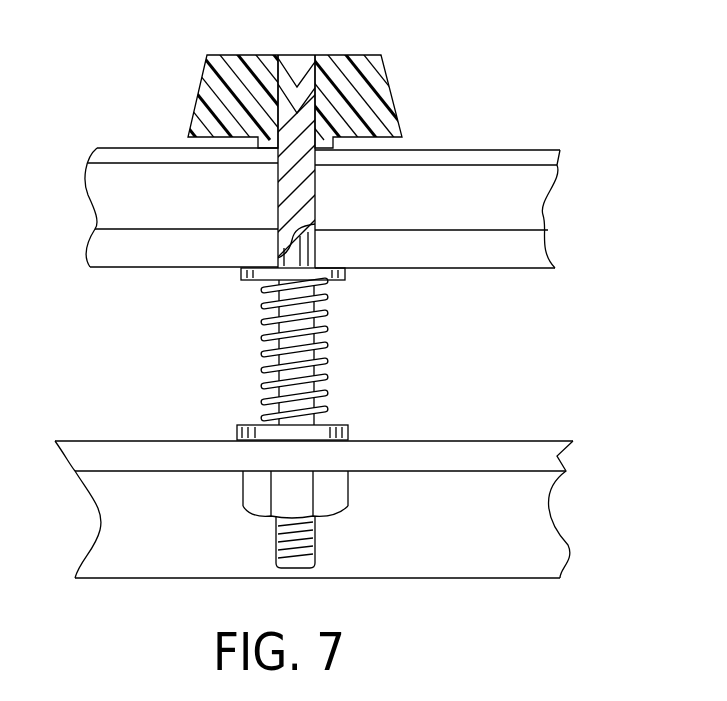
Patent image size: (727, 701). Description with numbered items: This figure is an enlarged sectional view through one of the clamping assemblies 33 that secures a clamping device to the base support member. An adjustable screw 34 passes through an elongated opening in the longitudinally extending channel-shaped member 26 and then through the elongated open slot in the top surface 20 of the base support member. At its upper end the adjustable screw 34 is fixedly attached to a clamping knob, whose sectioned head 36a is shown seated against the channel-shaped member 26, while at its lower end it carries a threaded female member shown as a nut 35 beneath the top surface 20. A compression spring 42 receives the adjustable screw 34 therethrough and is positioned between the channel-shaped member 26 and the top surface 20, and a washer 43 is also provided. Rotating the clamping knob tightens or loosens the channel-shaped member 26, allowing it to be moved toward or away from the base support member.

The top surface 20 is at (463, 441).
The channel-shaped member 26 is at (518, 149).
The clamping assembly 33 is at (440, 117).
The adjustable screw 34 is at (292, 321).
The nut 35 is at (335, 507).
The bolt head 36a is at (393, 67).
The compression spring 42 is at (325, 326).
The washer 43 is at (232, 426).